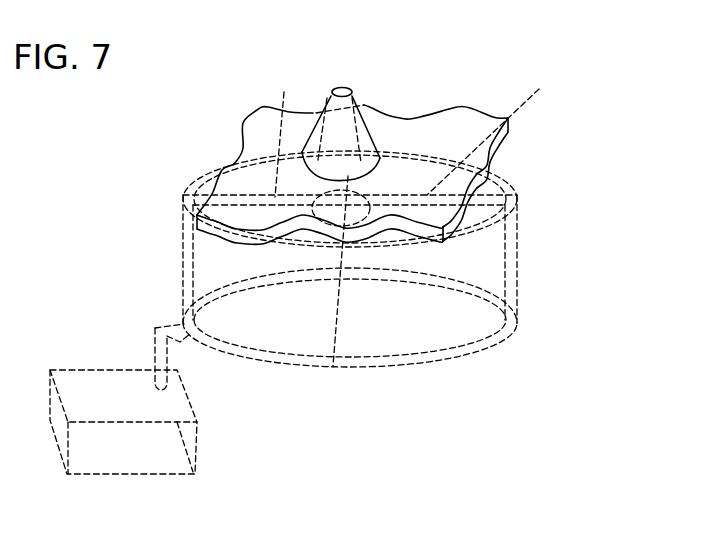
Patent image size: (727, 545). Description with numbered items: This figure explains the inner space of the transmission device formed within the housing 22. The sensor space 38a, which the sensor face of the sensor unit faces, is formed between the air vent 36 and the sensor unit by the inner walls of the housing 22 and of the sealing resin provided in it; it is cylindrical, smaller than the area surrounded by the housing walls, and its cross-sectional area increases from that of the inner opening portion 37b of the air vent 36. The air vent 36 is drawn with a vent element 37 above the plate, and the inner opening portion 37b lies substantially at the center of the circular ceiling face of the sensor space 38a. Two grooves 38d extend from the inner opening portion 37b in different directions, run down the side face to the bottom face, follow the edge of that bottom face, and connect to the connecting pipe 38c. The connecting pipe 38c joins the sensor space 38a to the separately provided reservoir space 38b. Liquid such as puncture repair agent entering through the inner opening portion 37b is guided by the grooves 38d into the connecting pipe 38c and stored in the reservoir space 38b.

The housing 22 is at (503, 150).
The air vent 36 is at (373, 142).
The cone 37 is at (362, 105).
The inner opening portion 37b is at (339, 372).
The sensor space 38a is at (443, 300).
The reservoir space 38b is at (170, 444).
The connecting pipe 38c is at (173, 342).
The grooves 38d is at (417, 134).